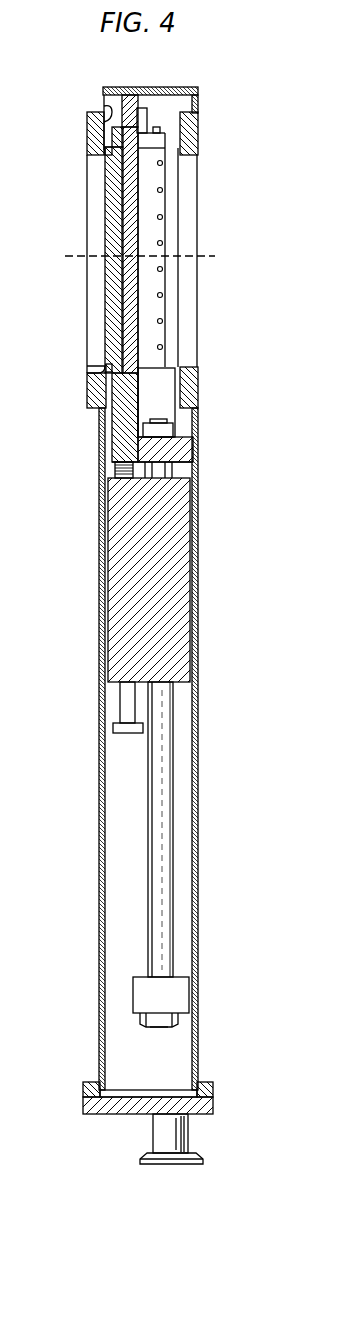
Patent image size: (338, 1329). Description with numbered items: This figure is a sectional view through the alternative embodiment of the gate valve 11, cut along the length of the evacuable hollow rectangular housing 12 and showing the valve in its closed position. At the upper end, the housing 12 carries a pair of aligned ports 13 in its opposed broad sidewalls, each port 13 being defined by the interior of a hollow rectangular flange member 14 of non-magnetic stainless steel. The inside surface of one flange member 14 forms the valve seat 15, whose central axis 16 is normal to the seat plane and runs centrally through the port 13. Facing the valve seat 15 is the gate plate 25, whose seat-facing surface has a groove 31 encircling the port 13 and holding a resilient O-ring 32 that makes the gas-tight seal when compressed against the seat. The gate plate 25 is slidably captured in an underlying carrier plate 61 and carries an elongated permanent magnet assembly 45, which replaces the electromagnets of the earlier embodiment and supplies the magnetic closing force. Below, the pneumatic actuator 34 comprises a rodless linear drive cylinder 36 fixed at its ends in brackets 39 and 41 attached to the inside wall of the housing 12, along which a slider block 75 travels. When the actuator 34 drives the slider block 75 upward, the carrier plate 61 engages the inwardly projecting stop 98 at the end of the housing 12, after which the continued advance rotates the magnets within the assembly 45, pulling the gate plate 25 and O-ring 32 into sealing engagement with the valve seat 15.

The gate valve 11 is at (88, 484).
The housing 12 is at (165, 88).
The ports 13 is at (88, 168).
The flange members 14 is at (88, 126).
The valve seat 15 is at (106, 110).
The central axis 16 is at (213, 258).
The gate plate 25 is at (110, 285).
The groove 31 is at (94, 370).
The O-ring 32 is at (107, 360).
The pneumatic actuator 34 is at (146, 605).
The pneumatic actuator cylinder 36 is at (175, 785).
The bracket 39 is at (190, 453).
The bracket 41 is at (185, 995).
The permanent magnet assembly 45 is at (160, 204).
The carrier plate 61 is at (138, 306).
The slider block 75 is at (175, 536).
The stop 98 is at (116, 100).